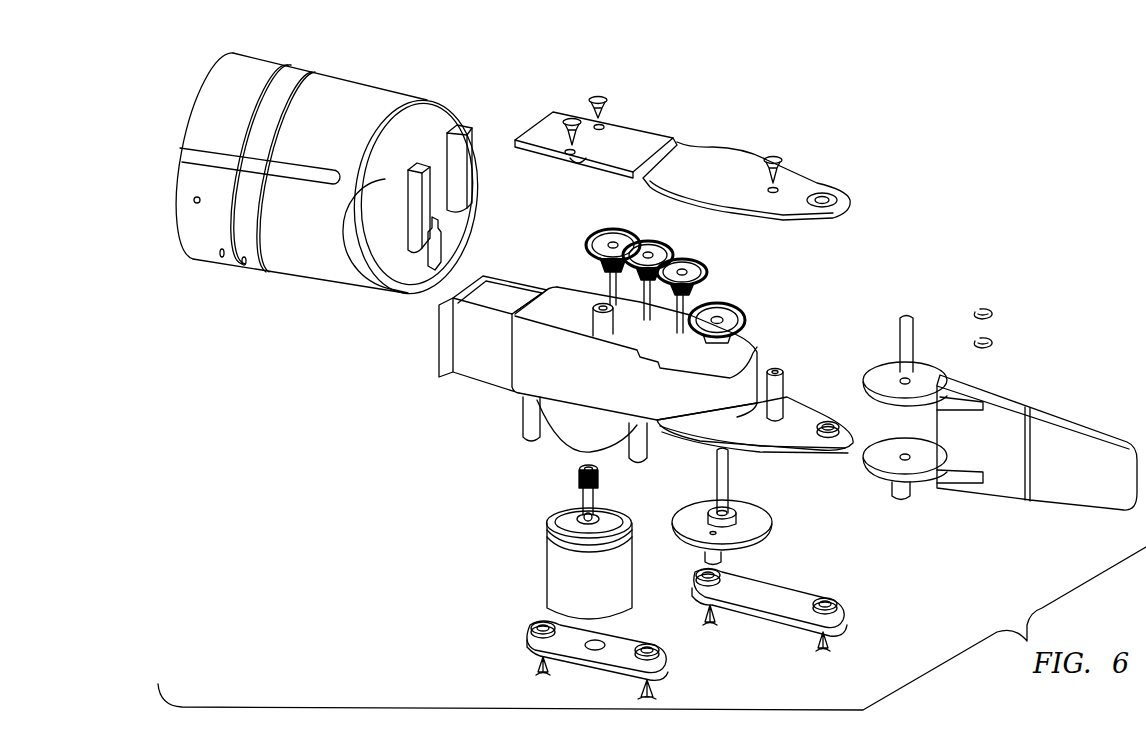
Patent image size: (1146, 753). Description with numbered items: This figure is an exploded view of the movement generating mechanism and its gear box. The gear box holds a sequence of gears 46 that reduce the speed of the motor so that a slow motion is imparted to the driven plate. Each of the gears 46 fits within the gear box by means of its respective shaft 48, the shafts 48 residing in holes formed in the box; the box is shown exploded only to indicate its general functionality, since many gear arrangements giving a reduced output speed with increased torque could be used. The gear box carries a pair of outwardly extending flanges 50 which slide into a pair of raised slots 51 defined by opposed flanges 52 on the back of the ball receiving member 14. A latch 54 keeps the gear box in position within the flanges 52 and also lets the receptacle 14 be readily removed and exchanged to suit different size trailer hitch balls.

The ball receiving member 14 is at (360, 128).
The gears 46 is at (647, 250).
The shafts 48 is at (603, 287).
The outwardly extending flanges 50 is at (438, 342).
The raised slots 51 is at (471, 173).
The opposed flanges 52 is at (430, 107).
The latch 54 is at (438, 236).